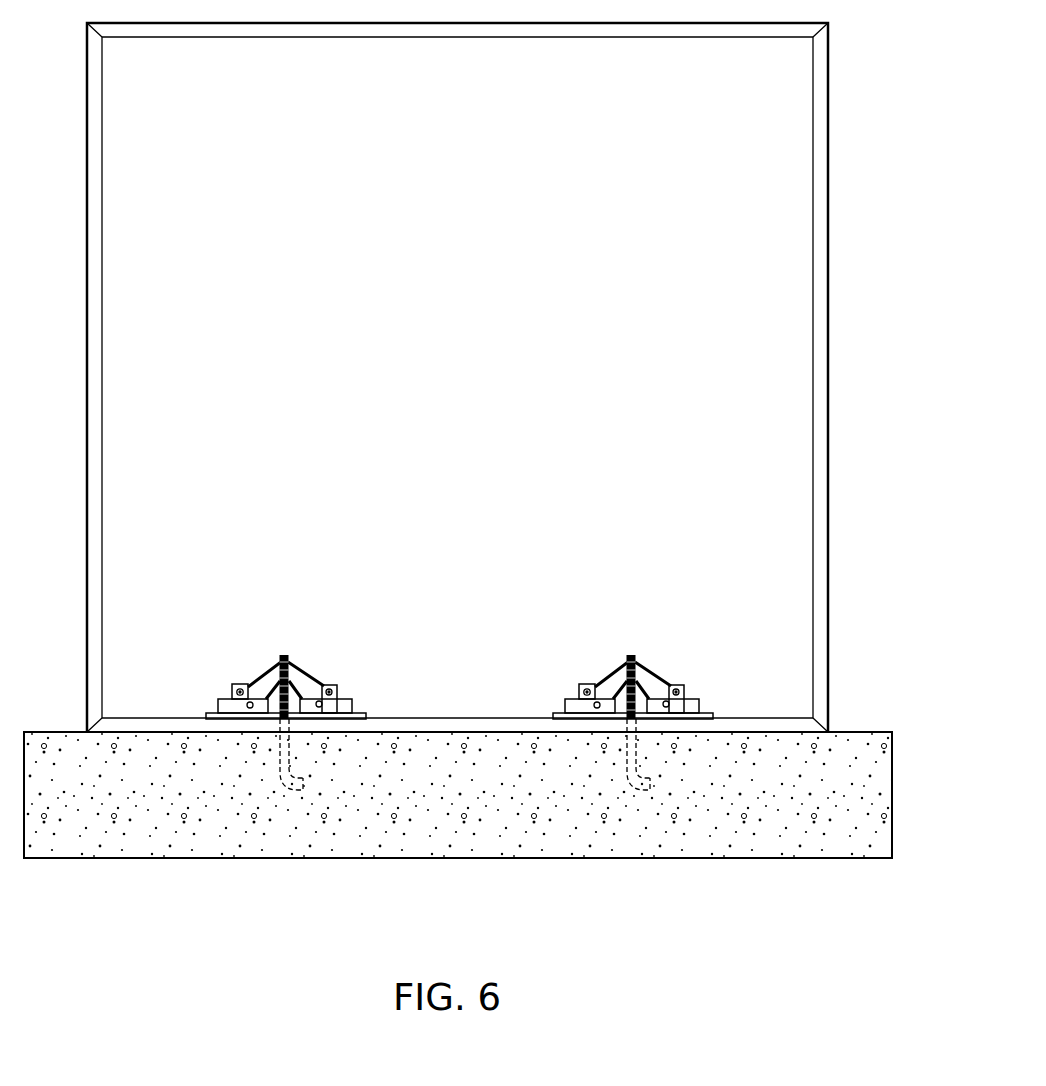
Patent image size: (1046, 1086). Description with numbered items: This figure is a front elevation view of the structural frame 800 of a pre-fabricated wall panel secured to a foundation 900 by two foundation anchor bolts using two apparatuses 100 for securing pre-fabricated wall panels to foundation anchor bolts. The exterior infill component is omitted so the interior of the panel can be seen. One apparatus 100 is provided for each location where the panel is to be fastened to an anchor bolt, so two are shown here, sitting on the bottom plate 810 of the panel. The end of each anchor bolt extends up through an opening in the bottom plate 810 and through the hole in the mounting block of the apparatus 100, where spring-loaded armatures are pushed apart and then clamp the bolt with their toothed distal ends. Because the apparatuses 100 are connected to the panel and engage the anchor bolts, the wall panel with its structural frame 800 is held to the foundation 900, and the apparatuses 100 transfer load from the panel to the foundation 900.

The apparatus for securing pre-fabricated wall panels to foundation anchor bolts 100 is at (597, 688).
The structural frame 800 is at (836, 228).
The bottom plate 810 is at (763, 718).
The foundation 900 is at (155, 823).